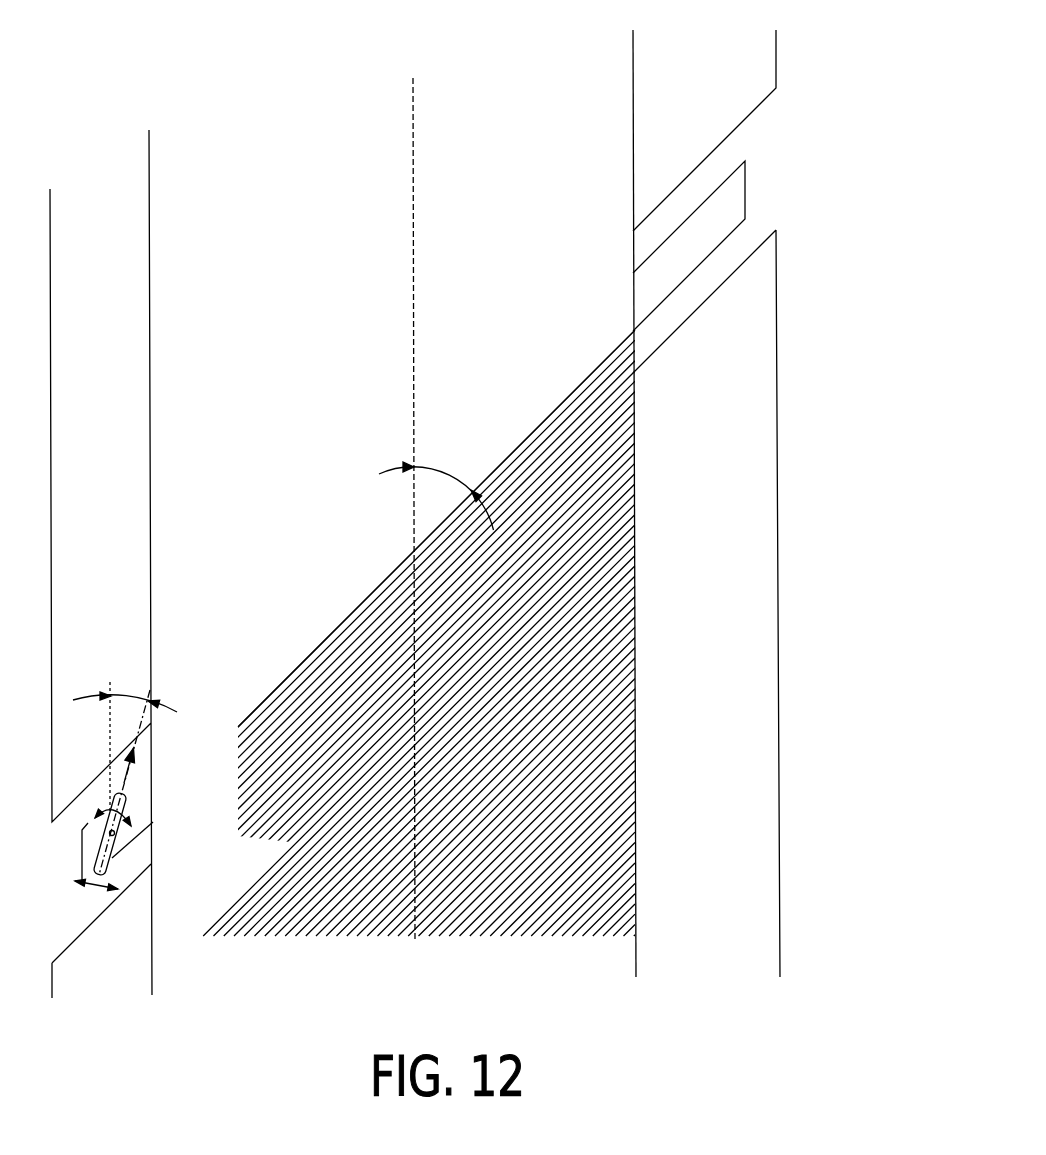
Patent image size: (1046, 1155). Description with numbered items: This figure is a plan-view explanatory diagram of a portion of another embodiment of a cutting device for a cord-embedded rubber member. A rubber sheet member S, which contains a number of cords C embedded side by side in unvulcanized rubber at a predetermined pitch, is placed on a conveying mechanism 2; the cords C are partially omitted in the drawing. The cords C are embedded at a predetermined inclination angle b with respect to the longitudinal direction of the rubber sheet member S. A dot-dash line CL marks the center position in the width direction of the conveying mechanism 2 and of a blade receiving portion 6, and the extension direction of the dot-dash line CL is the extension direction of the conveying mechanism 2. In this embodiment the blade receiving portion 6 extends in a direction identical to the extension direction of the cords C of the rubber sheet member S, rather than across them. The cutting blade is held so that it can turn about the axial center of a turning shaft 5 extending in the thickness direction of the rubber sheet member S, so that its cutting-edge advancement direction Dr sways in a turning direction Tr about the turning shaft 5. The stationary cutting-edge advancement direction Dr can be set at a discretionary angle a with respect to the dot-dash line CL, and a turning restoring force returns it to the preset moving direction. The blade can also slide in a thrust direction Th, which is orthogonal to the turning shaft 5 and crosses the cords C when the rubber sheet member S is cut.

The conveying mechanism 2 is at (758, 76).
The blade receiving portion 6 is at (738, 203).
The turning shaft 5 is at (120, 835).
The cords C is at (513, 453).
The rubber sheet member S is at (658, 444).
The dot-dash line CL is at (418, 527).
The angle a is at (125, 772).
The inclination angle b is at (436, 486).
The cutting-edge advancement direction Dr is at (128, 780).
The turning direction Tr is at (130, 820).
The thrust direction Th is at (90, 887).